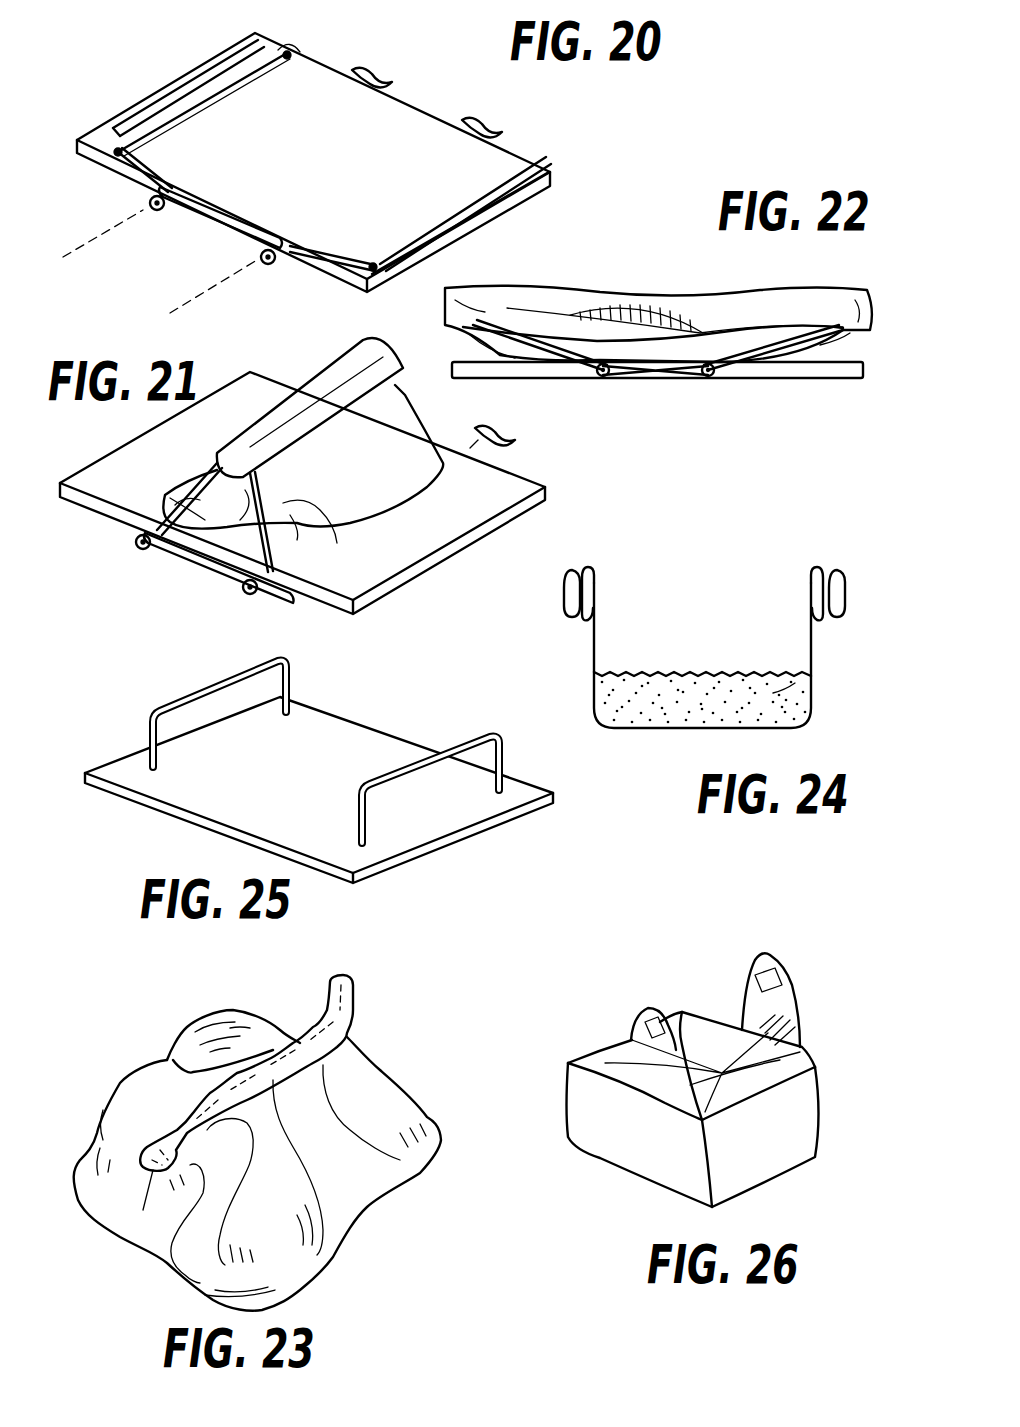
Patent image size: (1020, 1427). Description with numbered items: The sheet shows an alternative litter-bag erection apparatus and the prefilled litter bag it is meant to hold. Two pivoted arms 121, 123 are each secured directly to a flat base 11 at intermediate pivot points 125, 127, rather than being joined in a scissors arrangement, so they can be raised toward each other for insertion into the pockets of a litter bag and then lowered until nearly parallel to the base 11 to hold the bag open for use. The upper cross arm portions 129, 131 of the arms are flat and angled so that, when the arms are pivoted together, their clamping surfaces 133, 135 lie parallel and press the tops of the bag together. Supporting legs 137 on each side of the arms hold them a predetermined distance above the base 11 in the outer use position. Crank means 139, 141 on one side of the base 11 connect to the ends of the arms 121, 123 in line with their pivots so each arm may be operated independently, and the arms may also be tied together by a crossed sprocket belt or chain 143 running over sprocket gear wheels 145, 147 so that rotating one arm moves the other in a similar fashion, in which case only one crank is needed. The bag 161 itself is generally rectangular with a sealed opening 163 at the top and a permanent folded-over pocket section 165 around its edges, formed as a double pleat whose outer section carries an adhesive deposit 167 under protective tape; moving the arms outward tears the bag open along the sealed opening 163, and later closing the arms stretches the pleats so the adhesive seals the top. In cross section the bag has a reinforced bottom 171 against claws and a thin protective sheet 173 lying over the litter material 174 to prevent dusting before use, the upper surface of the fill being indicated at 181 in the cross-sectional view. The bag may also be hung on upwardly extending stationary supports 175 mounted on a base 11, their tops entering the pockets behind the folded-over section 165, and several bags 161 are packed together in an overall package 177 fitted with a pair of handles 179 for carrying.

In FIG. 20, the base 11 is at (500, 230).
In FIG. 21, the base 11 is at (150, 438).
In FIG. 25, the base 11 is at (160, 840).
In FIG. 20, the pivoted arm 121 is at (315, 27).
In FIG. 22, the pivoted arm 121 is at (557, 403).
In FIG. 21, the pivoted arm 121 is at (157, 463).
In FIG. 20, the pivoted arm 123 is at (333, 220).
In FIG. 22, the pivoted arm 123 is at (763, 407).
In FIG. 21, the pivoted arm 123 is at (267, 477).
In FIG. 20, the pivot point 125 is at (80, 263).
In FIG. 20, the pivot point 127 is at (180, 283).
In FIG. 20, the upper cross arm portion 129 is at (180, 158).
In FIG. 20, the upper cross arm portion 131 is at (403, 198).
In FIG. 20, the clamping surface 133 is at (207, 125).
In FIG. 20, the clamping surface 135 is at (457, 167).
In FIG. 20, the supporting leg 137 is at (293, 62).
In FIG. 20, the crank means 139 is at (403, 63).
In FIG. 20, the crank means 141 is at (517, 112).
In FIG. 21, the crank means 141 is at (535, 450).
In FIG. 20, the crossed sprocket belt or chain 143 is at (183, 240).
In FIG. 22, the crossed sprocket belt or chain 143 is at (657, 413).
In FIG. 21, the crossed sprocket belt or chain 143 is at (183, 590).
In FIG. 20, the sprocket gear wheel 145 is at (113, 203).
In FIG. 21, the sprocket gear wheel 145 is at (100, 540).
In FIG. 20, the sprocket gear wheel 147 is at (280, 283).
In FIG. 21, the sprocket gear wheel 147 is at (267, 617).
In FIG. 22, the bag 161 is at (707, 262).
In FIG. 21, the bag 161 is at (400, 520).
In FIG. 23, the bag 161 is at (130, 1080).
In FIG. 26, the bag 161 is at (835, 1003).
In FIG. 23, the sealed opening 163 is at (397, 1008).
In FIG. 24, the folded-over section 165 is at (505, 598).
In FIG. 23, the folded-over section 165 is at (303, 1097).
In FIG. 24, the adhesive deposit 167 is at (824, 590).
In FIG. 23, the adhesive deposit 167 is at (245, 1178).
In FIG. 24, the reinforced bottom 171 is at (757, 750).
In FIG. 24, the protective sheet 173 is at (727, 670).
In FIG. 24, the litter material 174 is at (795, 683).
In FIG. 25, the stationary support 175 is at (160, 683).
In FIG. 26, the package 177 is at (768, 1217).
In FIG. 26, the handle 179 is at (745, 990).
In FIG. 24, the fill surface 181 is at (633, 667).